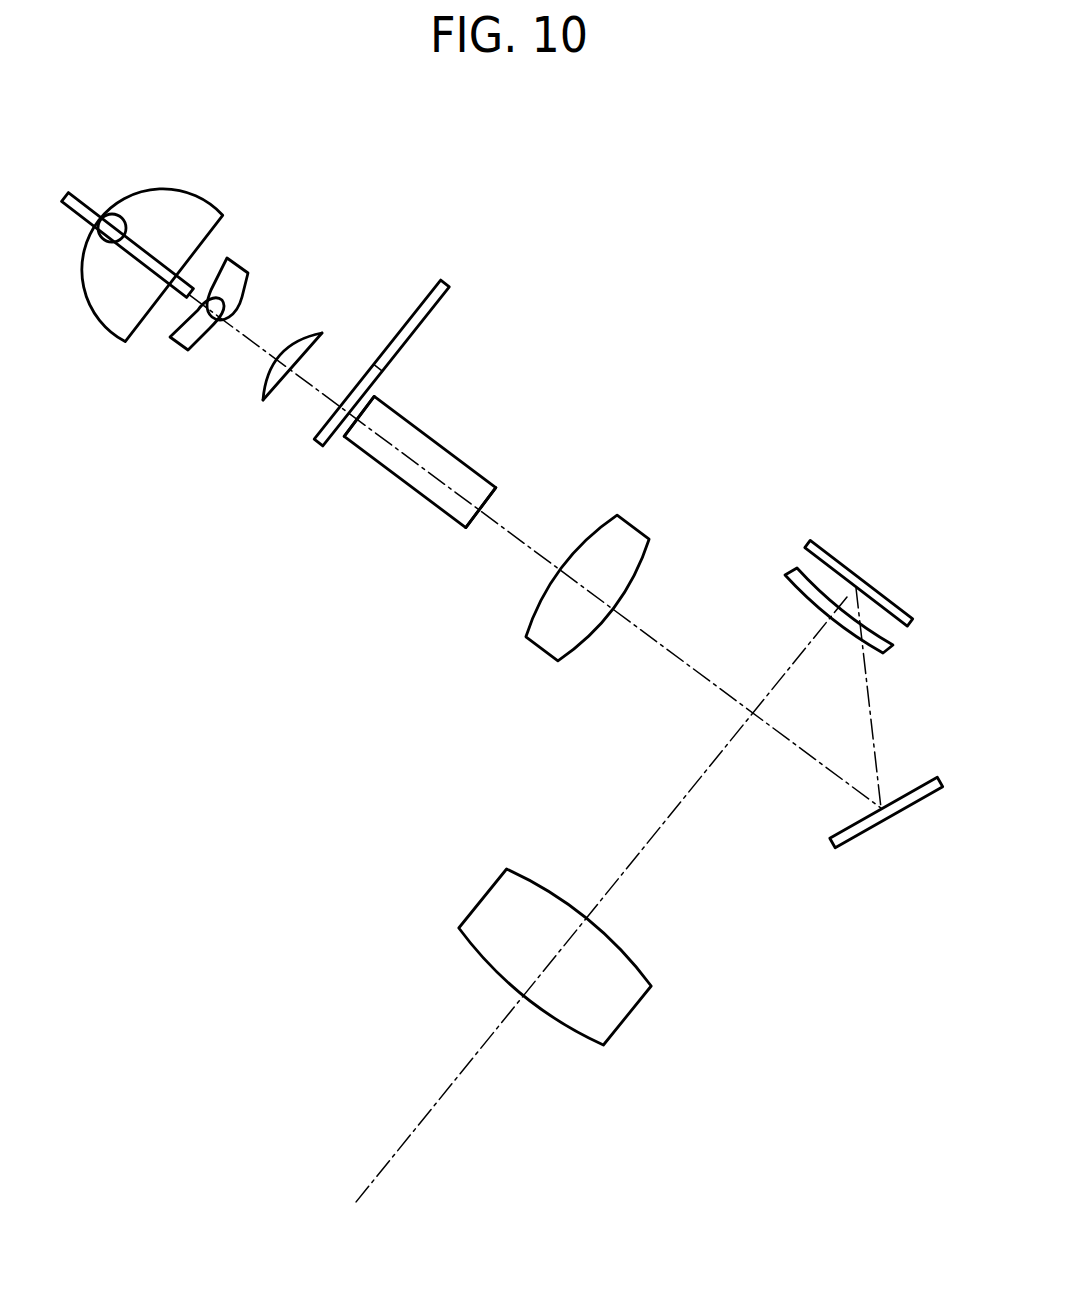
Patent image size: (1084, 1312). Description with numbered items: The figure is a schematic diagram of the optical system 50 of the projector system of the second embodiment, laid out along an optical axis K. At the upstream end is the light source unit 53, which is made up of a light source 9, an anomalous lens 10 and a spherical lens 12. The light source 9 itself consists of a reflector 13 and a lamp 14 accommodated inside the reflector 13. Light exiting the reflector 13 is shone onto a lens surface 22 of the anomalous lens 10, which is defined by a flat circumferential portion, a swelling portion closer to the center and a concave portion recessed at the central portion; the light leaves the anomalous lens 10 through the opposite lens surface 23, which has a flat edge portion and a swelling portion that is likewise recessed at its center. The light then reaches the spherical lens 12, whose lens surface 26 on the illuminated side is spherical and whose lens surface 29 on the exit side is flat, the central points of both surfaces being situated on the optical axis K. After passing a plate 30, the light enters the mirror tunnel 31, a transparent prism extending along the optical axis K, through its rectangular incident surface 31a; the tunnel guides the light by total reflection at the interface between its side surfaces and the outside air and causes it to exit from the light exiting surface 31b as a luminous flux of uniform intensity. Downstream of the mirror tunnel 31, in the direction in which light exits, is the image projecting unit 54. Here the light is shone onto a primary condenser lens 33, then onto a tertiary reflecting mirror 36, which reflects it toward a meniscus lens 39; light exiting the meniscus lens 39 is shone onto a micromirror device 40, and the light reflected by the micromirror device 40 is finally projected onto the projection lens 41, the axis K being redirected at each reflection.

The light source 9 is at (212, 170).
The anomalous lens 10 is at (181, 343).
The spherical lens 12 is at (328, 334).
The reflector 13 is at (152, 190).
The lamp 14 is at (104, 243).
The lens surface 22 is at (228, 259).
The lens surface 23 is at (246, 292).
The lens surface 26 is at (311, 336).
The lens surface 29 is at (280, 395).
The filter plate 30 is at (444, 282).
The mirror tunnel 31 is at (454, 447).
The incident surface 31a is at (341, 440).
The light exiting surface 31b is at (470, 528).
The primary condenser lens 33 is at (638, 524).
The tertiary reflecting mirror 36 is at (853, 843).
The meniscus lens 39 is at (794, 569).
The micromirror device 40 is at (814, 543).
The projection lens 41 is at (640, 1007).
The illumination optical system 50 is at (668, 200).
The light source unit 53 is at (357, 177).
The image projecting unit 54 is at (863, 490).
The optical axis K is at (250, 341).